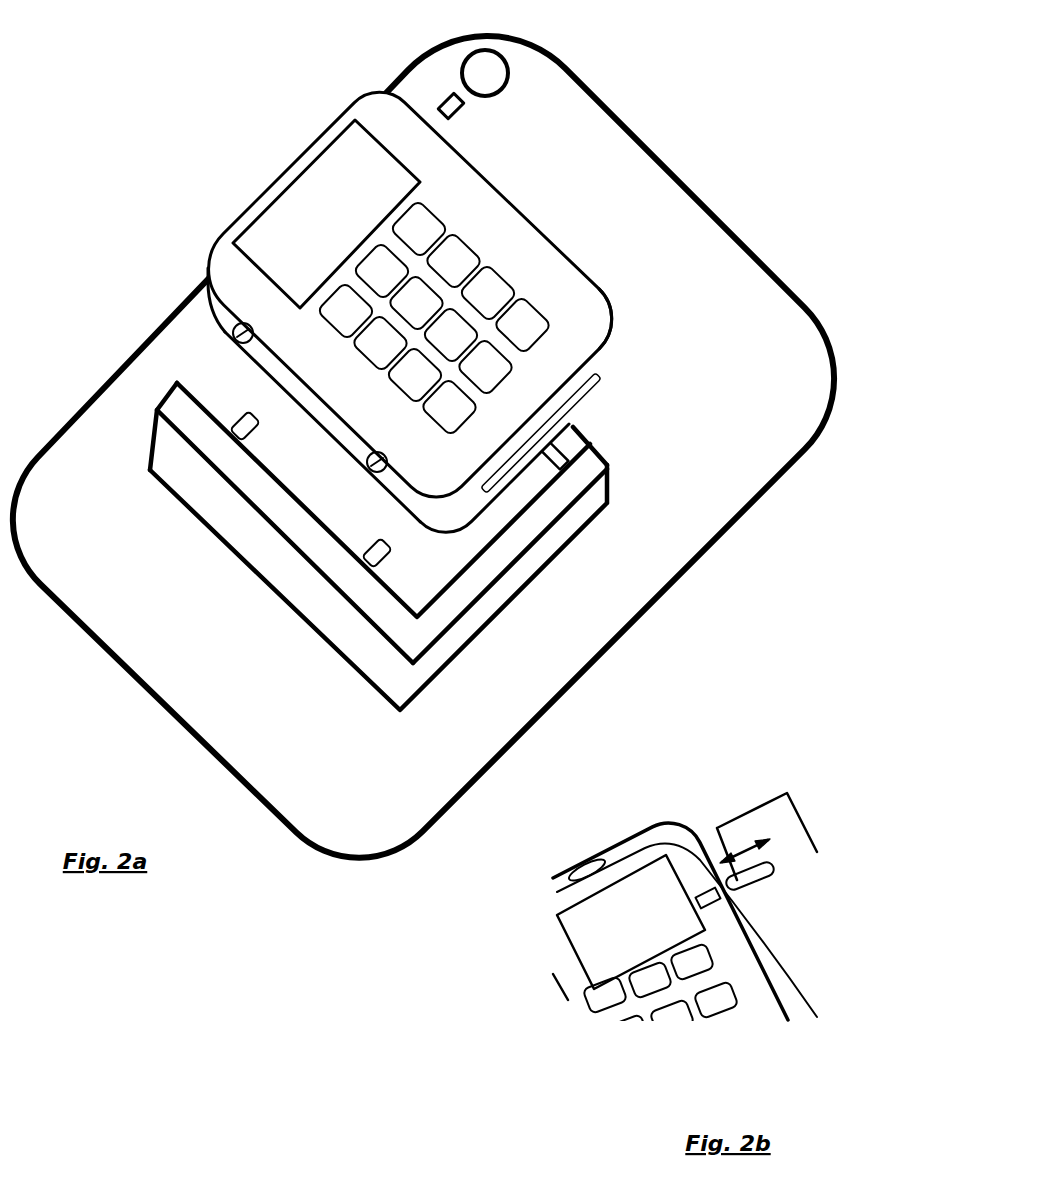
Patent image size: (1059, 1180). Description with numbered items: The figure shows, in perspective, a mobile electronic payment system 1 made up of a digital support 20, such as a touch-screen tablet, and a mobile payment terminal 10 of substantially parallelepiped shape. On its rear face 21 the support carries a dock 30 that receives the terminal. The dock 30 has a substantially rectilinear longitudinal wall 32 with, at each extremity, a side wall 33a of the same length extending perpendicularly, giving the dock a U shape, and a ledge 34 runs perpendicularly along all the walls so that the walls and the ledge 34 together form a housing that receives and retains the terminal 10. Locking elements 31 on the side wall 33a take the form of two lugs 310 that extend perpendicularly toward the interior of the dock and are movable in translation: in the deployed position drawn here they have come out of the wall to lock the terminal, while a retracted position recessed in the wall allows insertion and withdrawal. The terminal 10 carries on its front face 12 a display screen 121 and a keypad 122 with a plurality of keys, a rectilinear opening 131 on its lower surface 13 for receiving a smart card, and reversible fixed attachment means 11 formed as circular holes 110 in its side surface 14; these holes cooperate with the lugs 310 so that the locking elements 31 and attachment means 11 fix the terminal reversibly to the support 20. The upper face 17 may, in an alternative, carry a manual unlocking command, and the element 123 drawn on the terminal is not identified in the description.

In FIG. 2A, the payment system 1 is at (464, 450).
In FIG. 2A, the mobile payment terminal 10 is at (514, 418).
In FIG. 2B, the mobile payment terminal 10 is at (662, 933).
In FIG. 2A, the reversible fixed attachment means 11 is at (369, 480).
In FIG. 2A, the front face 12 is at (463, 183).
In FIG. 2A, the display screen 121 is at (329, 182).
In FIG. 2A, the keypad 122 is at (492, 262).
In FIG. 2B, the speaker 123 is at (560, 878).
In FIG. 2A, the lower surface 13 is at (602, 360).
In FIG. 2A, the rectilinear opening 131 is at (565, 402).
In FIG. 2A, the side surface 14 is at (320, 410).
In FIG. 2B, the upper face 17 is at (647, 833).
In FIG. 2A, the circular holes 110 is at (243, 328).
In FIG. 2B, the circular holes 110 is at (722, 901).
In FIG. 2A, the digital support 20 is at (464, 447).
In FIG. 2A, the rear face 21 is at (750, 317).
In FIG. 2A, the dock 30 is at (356, 577).
In FIG. 2B, the dock 30 is at (821, 804).
In FIG. 2A, the locking elements 31 is at (235, 443).
In FIG. 2A, the lugs 310 is at (243, 423).
In FIG. 2B, the lugs 310 is at (775, 873).
In FIG. 2A, the longitudinal wall 32 is at (510, 583).
In FIG. 2A, the side wall 33a is at (343, 640).
In FIG. 2A, the ledge 34 is at (547, 509).